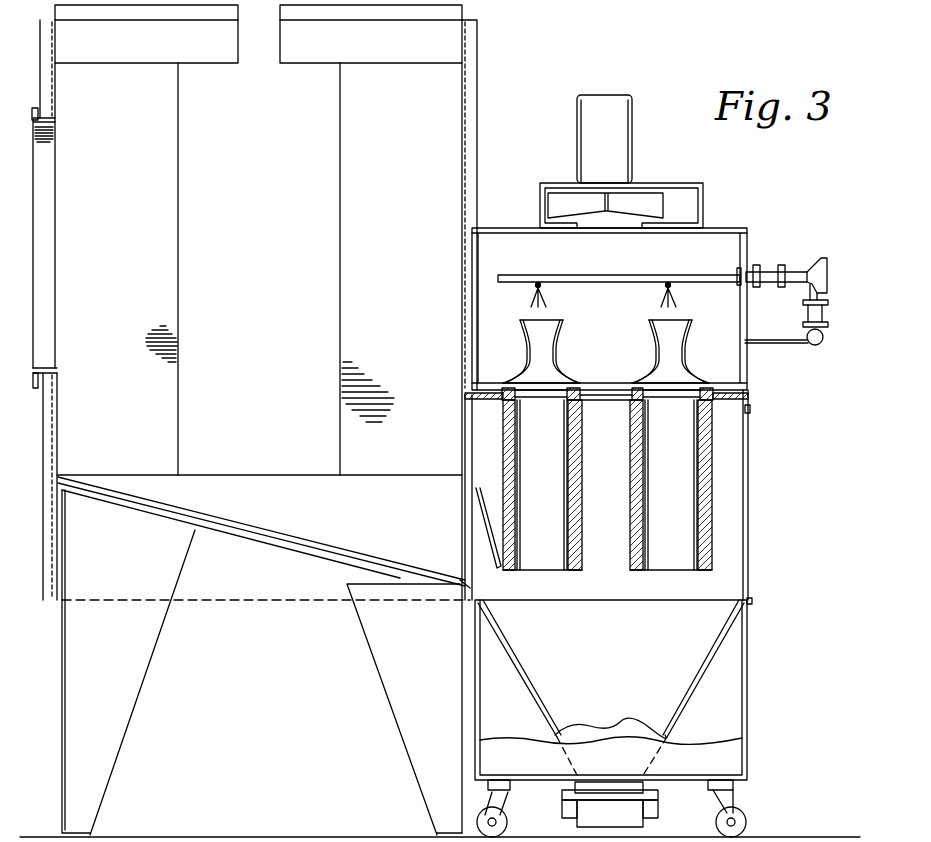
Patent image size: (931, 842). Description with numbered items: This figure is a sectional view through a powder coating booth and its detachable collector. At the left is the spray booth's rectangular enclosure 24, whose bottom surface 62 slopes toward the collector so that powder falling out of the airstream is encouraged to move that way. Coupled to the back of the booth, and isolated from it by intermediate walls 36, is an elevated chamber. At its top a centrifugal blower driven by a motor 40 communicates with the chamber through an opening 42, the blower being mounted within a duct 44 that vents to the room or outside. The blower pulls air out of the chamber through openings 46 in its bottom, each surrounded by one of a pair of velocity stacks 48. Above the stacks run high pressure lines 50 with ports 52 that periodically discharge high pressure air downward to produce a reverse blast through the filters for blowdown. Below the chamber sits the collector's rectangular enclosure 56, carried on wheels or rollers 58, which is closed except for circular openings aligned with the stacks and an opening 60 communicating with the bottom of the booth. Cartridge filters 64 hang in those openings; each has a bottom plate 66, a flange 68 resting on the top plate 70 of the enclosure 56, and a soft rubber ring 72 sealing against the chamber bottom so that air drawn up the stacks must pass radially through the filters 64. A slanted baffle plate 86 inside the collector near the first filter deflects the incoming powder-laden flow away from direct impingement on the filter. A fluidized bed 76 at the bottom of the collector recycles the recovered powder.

The rectangular enclosure 24 is at (152, 255).
The intermediate walls 36 is at (462, 288).
The motor 40 is at (612, 92).
The opening 42 is at (578, 236).
The duct 44 is at (676, 184).
The openings 46 is at (553, 380).
The velocity stacks 48 is at (524, 357).
The high pressure lines 50 is at (613, 277).
The ports 52 is at (539, 287).
The rectangular enclosure 56 is at (749, 667).
The wheels or rollers 58 is at (745, 816).
The opening 60 is at (478, 527).
The bottom surface 62 is at (276, 532).
The cartridge filters 64 is at (514, 494).
The bottom plate 66 is at (546, 576).
The flange 68 is at (468, 395).
The top plate 70 is at (604, 400).
The soft rubber ring 72 is at (512, 392).
The fluidized bed 76 is at (659, 800).
The deflector plate 86 is at (494, 520).